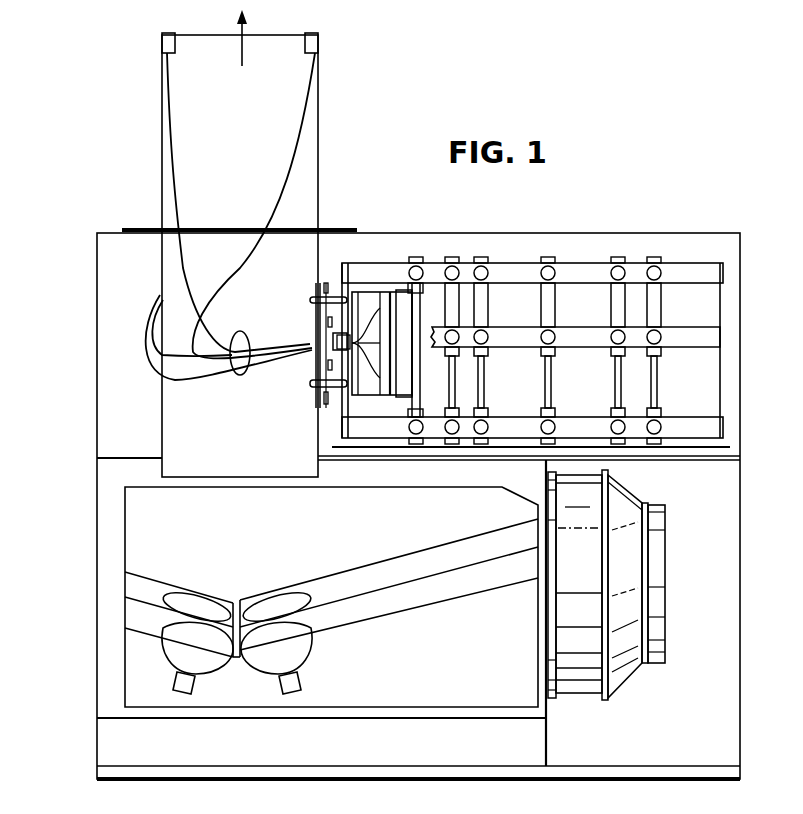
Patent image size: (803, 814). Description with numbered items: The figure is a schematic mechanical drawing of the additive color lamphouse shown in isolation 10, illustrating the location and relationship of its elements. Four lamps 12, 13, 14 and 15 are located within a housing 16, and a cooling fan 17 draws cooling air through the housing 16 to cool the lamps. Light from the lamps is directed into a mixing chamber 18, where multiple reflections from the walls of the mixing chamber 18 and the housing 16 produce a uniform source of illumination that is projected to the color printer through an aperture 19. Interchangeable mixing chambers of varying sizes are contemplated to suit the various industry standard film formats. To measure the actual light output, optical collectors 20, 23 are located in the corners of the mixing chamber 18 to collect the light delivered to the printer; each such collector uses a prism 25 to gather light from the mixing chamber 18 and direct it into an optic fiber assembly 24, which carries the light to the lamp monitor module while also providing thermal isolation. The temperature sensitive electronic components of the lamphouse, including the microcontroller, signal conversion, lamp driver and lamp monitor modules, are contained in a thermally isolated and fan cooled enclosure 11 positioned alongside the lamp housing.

The additive color lighthouse 10 is at (72, 516).
The fan cooled enclosure 11 is at (675, 263).
The lamp 12 is at (195, 605).
The lamp 13 is at (272, 600).
The lamp 14 is at (176, 650).
The lamp 15 is at (296, 648).
The housing 16 is at (125, 660).
The cooling fan 17 is at (585, 698).
The mixing chamber 18 is at (323, 164).
The aperture 19 is at (243, 50).
The optical collector 20 is at (316, 33).
The optical collector 23 is at (165, 33).
The optic fiber assembly 24 is at (240, 331).
The prism 25 is at (306, 360).